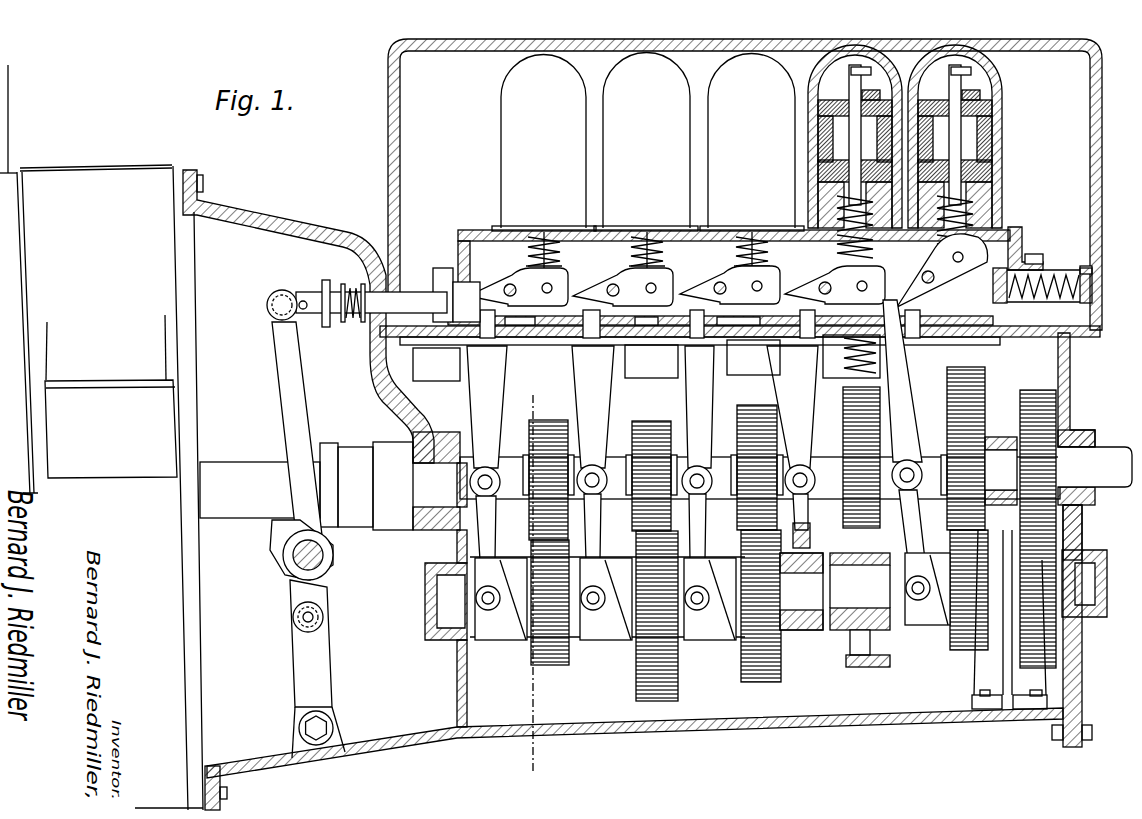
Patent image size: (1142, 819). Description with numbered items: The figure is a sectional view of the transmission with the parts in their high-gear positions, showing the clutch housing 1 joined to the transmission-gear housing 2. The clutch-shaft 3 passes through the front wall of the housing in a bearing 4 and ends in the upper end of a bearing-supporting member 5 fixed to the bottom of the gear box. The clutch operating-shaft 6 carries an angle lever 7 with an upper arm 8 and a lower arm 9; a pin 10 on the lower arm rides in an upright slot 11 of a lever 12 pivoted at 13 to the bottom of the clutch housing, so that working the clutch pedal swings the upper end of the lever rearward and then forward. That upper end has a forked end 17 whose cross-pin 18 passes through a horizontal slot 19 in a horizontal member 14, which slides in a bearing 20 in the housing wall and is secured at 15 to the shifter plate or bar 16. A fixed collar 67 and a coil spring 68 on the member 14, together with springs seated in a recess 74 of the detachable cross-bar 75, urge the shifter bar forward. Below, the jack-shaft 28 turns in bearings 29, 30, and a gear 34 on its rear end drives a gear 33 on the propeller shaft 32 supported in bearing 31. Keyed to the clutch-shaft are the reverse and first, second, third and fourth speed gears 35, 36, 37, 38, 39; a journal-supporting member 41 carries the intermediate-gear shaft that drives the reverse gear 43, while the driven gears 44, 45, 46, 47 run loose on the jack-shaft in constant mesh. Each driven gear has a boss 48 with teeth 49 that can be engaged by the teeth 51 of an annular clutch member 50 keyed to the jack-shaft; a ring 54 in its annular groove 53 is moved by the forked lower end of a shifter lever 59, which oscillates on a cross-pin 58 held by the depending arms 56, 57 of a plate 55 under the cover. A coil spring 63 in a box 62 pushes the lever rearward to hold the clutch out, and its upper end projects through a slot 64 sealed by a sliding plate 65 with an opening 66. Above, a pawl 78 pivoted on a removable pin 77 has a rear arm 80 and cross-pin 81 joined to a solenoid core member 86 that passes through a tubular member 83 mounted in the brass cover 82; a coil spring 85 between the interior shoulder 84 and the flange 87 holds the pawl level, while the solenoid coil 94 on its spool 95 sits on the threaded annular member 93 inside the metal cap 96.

The clutch housing 1 is at (262, 216).
The transmission-gear housing 2 is at (540, 53).
The clutch-shaft 3 is at (233, 462).
The bearing 4 is at (415, 436).
The bearing-supporting member 5 is at (1000, 437).
The operating-shaft for the clutch 6 is at (323, 562).
The angle lever 7 is at (334, 556).
The upper arm 8 is at (272, 533).
The lower arm 9 is at (322, 585).
The pin 10 is at (323, 617).
The upright slot 11 is at (293, 617).
The lever 12 is at (303, 442).
The pivotal connection 13 is at (334, 722).
The horizontal member 14 is at (322, 291).
The securing connection 15 is at (440, 285).
The shifter plate or bar 16 is at (469, 244).
The forked end 17 is at (275, 292).
The cross-pin 18 is at (270, 306).
The horizontal slot 19 is at (318, 292).
The bearing 20 is at (352, 286).
The counter or jack-shaft 28 is at (725, 630).
The bearing 29 is at (447, 602).
The bearing 30 is at (1090, 618).
The bearing 31 is at (1085, 435).
The propeller shaft 32 is at (1112, 452).
The gear 33 is at (1038, 390).
The gear 34 is at (1085, 520).
The reverse driven gear 35 is at (549, 425).
The first speed driver gear 36 is at (652, 425).
The second speed driver gear 37 is at (755, 410).
The third speed driver gear 38 is at (846, 440).
The fourth speed driver gear 39 is at (978, 395).
The journal-supporting member 41 is at (562, 680).
The reverse gear 43 is at (553, 660).
The driven gear 44 is at (680, 655).
The driven gear 45 is at (752, 682).
The driven gear 46 is at (866, 667).
The driven gear 47 is at (960, 650).
The annular boss or projection 48 is at (530, 655).
The teeth 49 is at (520, 640).
The annular clutch member 50 is at (808, 632).
The teeth 51 is at (822, 632).
The annular groove 53 is at (812, 556).
The ring 54 is at (808, 540).
The plate 55 is at (660, 343).
The depending arm 56 is at (540, 453).
The depending arm 57 is at (792, 438).
The cross-pin 58 is at (698, 465).
The shifter lever 59 is at (903, 380).
The box 62 is at (836, 368).
The coil spring 63 is at (860, 370).
The slot 64 is at (778, 330).
The short plate 65 is at (532, 323).
The opening 66 is at (725, 320).
The fixed collar 67 is at (324, 325).
The coil spring 68 is at (359, 325).
The recess 74 is at (1093, 281).
The detachable cross-bar 75 is at (1087, 266).
The removable pin 77 is at (820, 270).
The catch or pawl 78 is at (558, 282).
The rearwardly extending arm 80 is at (980, 262).
The cross-pin 81 is at (964, 257).
The brass cover 82 is at (1020, 240).
The tubular member 83 is at (810, 210).
The interior shoulder 84 is at (999, 172).
The coil spring 85 is at (790, 220).
The solenoid core member 86 is at (852, 92).
The annular flange 87 is at (742, 246).
The annular brass member 93 is at (810, 206).
The solenoid coil 94 is at (999, 150).
The spool 95 is at (932, 95).
The metal cap 96 is at (820, 70).